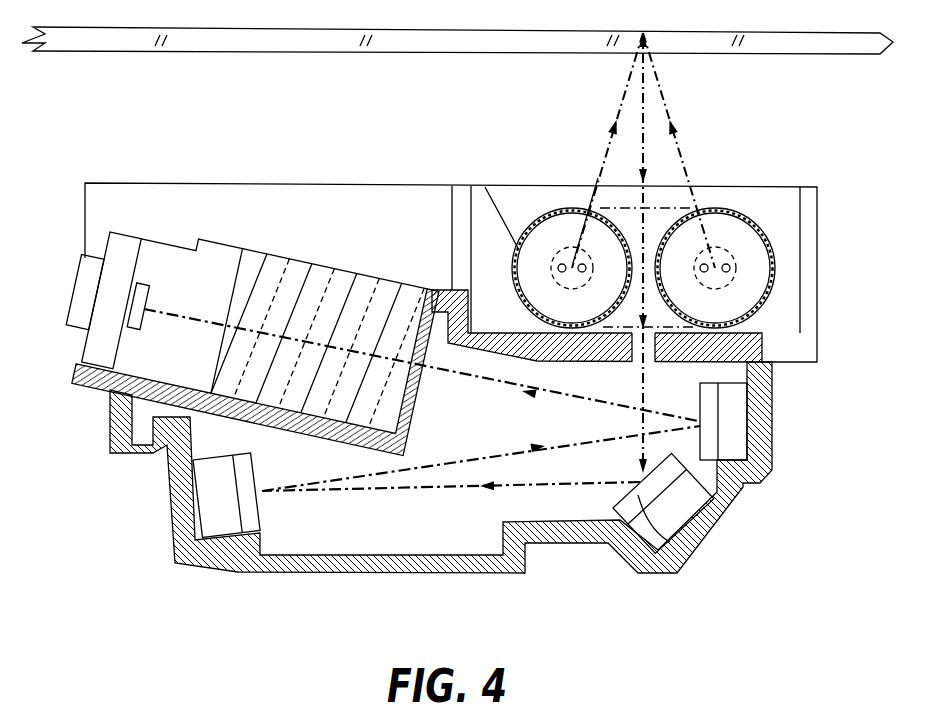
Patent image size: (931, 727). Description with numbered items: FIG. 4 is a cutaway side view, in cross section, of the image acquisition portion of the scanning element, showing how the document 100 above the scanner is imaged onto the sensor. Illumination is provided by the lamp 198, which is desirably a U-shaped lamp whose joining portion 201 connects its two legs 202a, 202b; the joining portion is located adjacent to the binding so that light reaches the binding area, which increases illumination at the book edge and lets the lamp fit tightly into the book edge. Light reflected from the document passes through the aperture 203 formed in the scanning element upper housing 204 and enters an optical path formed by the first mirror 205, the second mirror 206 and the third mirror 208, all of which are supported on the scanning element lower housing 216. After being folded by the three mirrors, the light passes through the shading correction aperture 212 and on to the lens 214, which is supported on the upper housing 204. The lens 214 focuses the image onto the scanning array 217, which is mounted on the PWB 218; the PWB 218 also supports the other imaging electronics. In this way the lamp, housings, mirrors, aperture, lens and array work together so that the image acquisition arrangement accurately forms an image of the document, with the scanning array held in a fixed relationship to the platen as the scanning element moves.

The document 100 is at (388, 55).
The lamp 198 is at (716, 196).
The joining portion 201 is at (594, 160).
The leg 202a is at (746, 214).
The leg 202b is at (556, 208).
The aperture 203 is at (648, 340).
The scanning element upper housing 204 is at (723, 363).
The first mirror 205 is at (703, 553).
The second mirror 206 is at (247, 507).
The third mirror 208 is at (710, 441).
The shading correction aperture 212 is at (432, 290).
The lens 214 is at (327, 266).
The scanning element lower housing 216 is at (725, 508).
The scanning array 217 is at (150, 298).
The PWB 218 is at (125, 238).